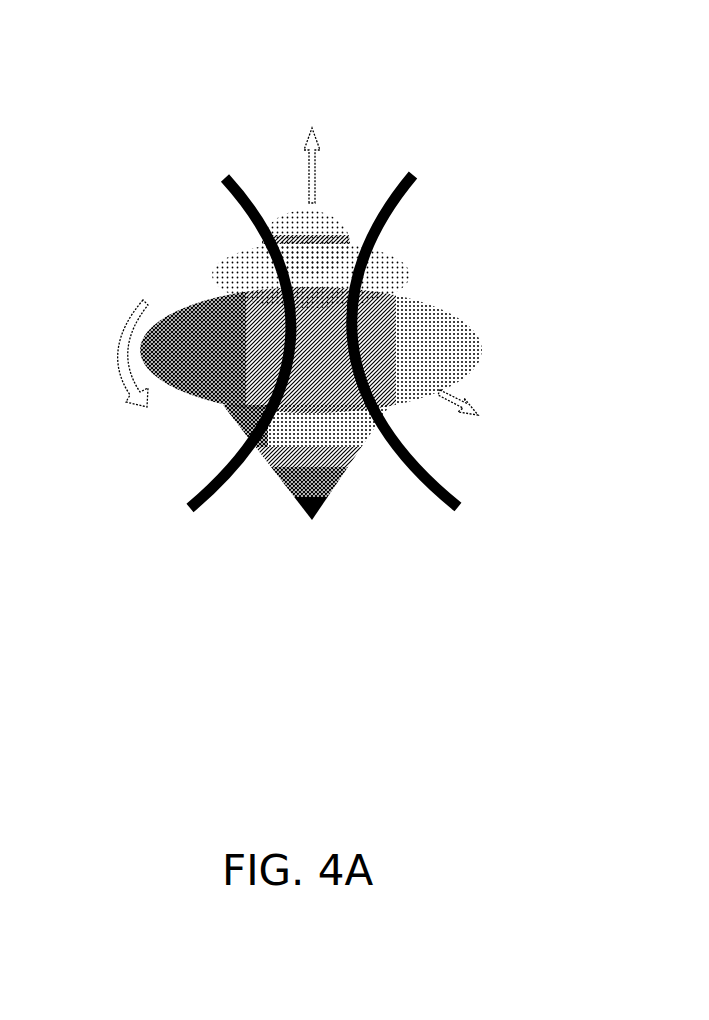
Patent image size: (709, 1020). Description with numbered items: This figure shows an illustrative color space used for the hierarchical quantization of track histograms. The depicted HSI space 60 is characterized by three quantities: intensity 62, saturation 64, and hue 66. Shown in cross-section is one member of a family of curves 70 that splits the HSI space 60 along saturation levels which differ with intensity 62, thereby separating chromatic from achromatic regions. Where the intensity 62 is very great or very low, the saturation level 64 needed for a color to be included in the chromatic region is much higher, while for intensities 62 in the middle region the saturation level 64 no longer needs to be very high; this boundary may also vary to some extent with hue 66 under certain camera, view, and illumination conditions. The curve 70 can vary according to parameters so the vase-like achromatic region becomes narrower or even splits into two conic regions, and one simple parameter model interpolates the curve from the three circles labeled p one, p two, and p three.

The HSI space 60 is at (477, 133).
The intensity 62 is at (320, 127).
The saturation 64 is at (487, 398).
The hue 66 is at (110, 327).
The curve 70 is at (240, 187).